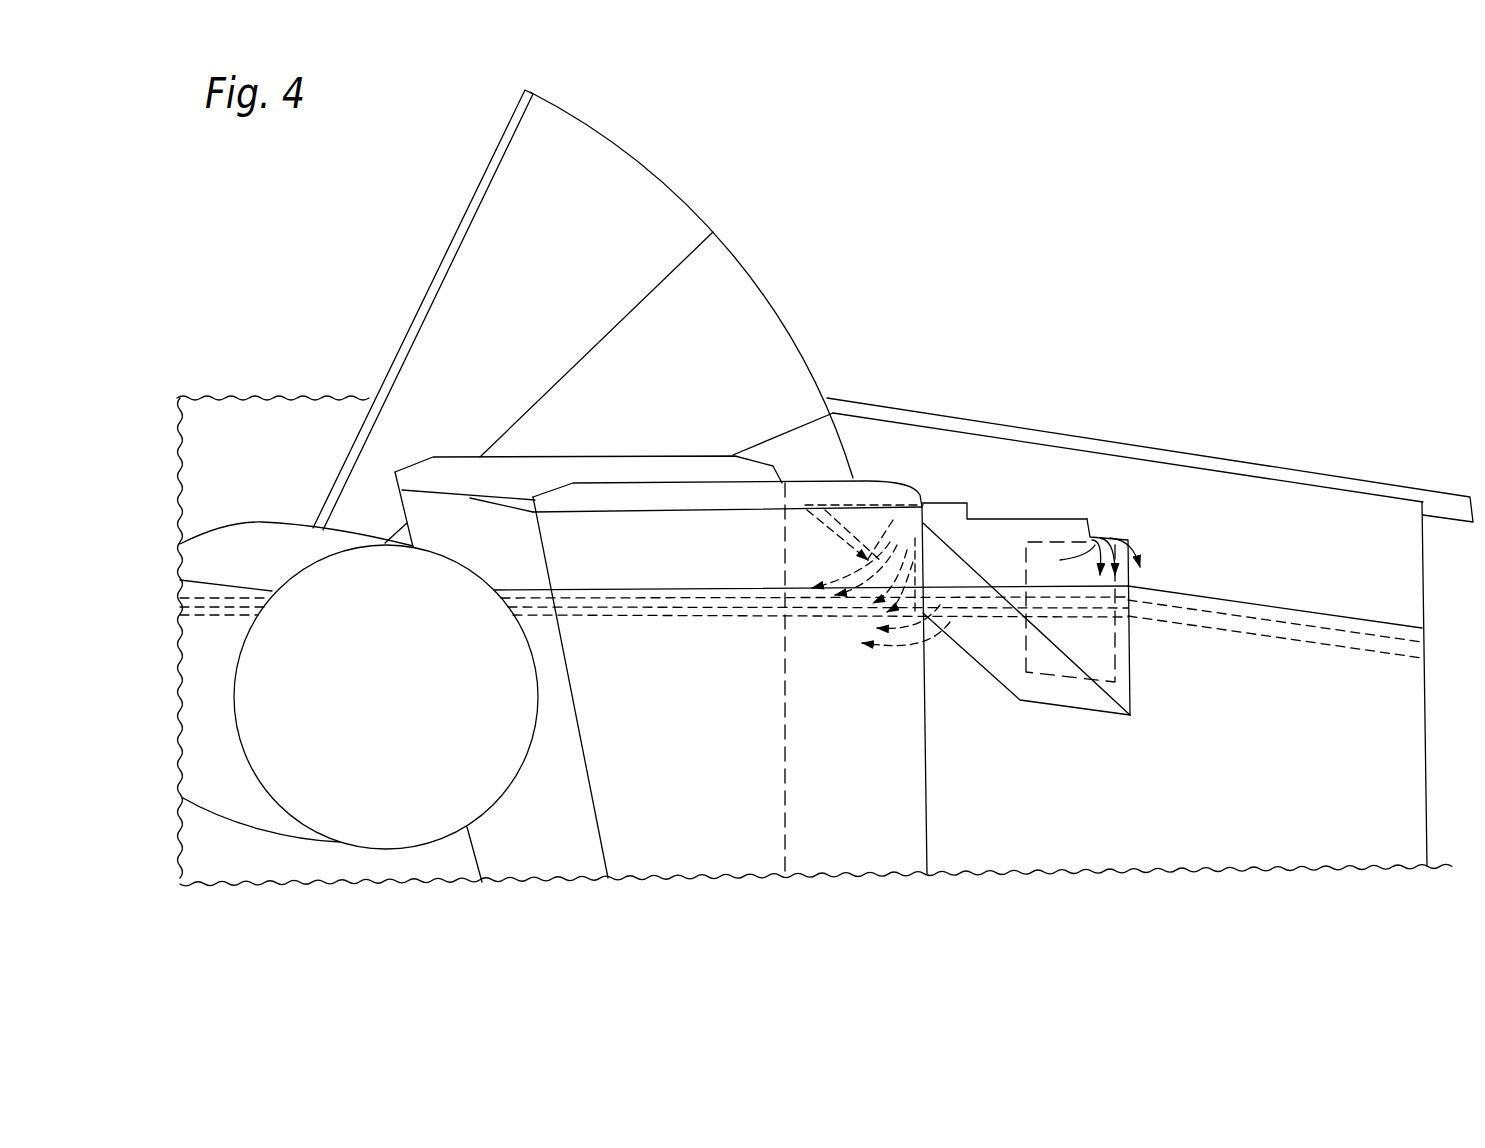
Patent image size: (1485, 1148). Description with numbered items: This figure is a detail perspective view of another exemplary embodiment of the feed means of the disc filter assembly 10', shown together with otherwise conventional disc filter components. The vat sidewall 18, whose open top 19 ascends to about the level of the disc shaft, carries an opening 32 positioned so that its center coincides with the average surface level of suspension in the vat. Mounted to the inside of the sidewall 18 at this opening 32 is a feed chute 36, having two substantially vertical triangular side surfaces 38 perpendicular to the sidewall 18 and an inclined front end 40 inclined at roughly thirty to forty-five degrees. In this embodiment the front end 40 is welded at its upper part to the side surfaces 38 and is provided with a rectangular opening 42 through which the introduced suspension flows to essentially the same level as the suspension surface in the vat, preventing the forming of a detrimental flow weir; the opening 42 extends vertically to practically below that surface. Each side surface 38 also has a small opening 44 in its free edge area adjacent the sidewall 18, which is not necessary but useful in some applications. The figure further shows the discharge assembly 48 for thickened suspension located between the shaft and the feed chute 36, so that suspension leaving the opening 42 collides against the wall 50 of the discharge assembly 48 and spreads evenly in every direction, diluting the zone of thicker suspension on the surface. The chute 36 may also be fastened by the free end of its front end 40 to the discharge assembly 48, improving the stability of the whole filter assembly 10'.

The disc filter assembly 10' is at (814, 488).
The sidewall 18 is at (1308, 538).
The open top 19 is at (1252, 464).
The opening 32 is at (1092, 537).
The feed chute 36 is at (982, 500).
The side surface 38 is at (1020, 533).
The front end 40 is at (1003, 660).
The rectangular opening 42 is at (873, 535).
The small opening 44 is at (1107, 525).
The discharge assembly 48 is at (505, 448).
The wall 50 is at (873, 810).